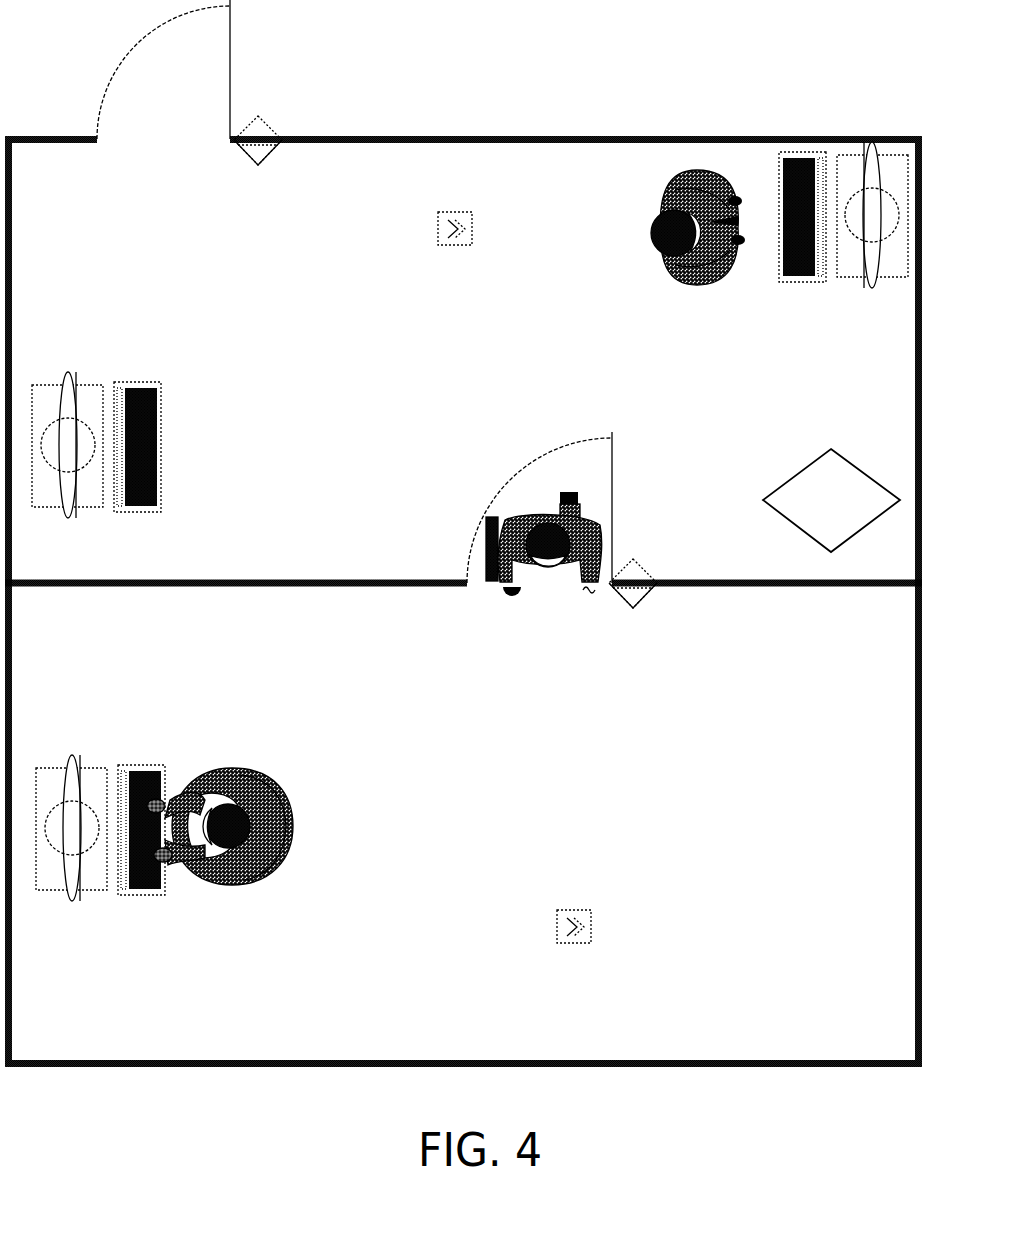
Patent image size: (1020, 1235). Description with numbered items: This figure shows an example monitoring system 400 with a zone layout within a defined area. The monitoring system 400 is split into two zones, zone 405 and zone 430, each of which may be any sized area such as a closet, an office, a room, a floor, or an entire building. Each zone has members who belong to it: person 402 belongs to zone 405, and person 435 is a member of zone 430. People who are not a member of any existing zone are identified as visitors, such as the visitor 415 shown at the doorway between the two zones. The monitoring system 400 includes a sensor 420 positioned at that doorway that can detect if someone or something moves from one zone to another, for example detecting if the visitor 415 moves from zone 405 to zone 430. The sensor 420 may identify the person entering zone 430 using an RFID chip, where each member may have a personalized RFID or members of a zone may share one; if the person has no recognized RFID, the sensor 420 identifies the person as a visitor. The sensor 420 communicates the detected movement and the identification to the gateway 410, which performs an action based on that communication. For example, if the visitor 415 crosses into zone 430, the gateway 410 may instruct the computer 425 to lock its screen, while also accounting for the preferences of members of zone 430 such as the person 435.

The monitoring system 400 is at (113, 192).
The person 402 is at (655, 215).
The zone 405 is at (388, 310).
The gateway 410 is at (823, 445).
The visitor 415 is at (483, 523).
The sensor 420 is at (635, 595).
The computer 425 is at (100, 758).
The zone 430 is at (465, 772).
The person 435 is at (210, 885).